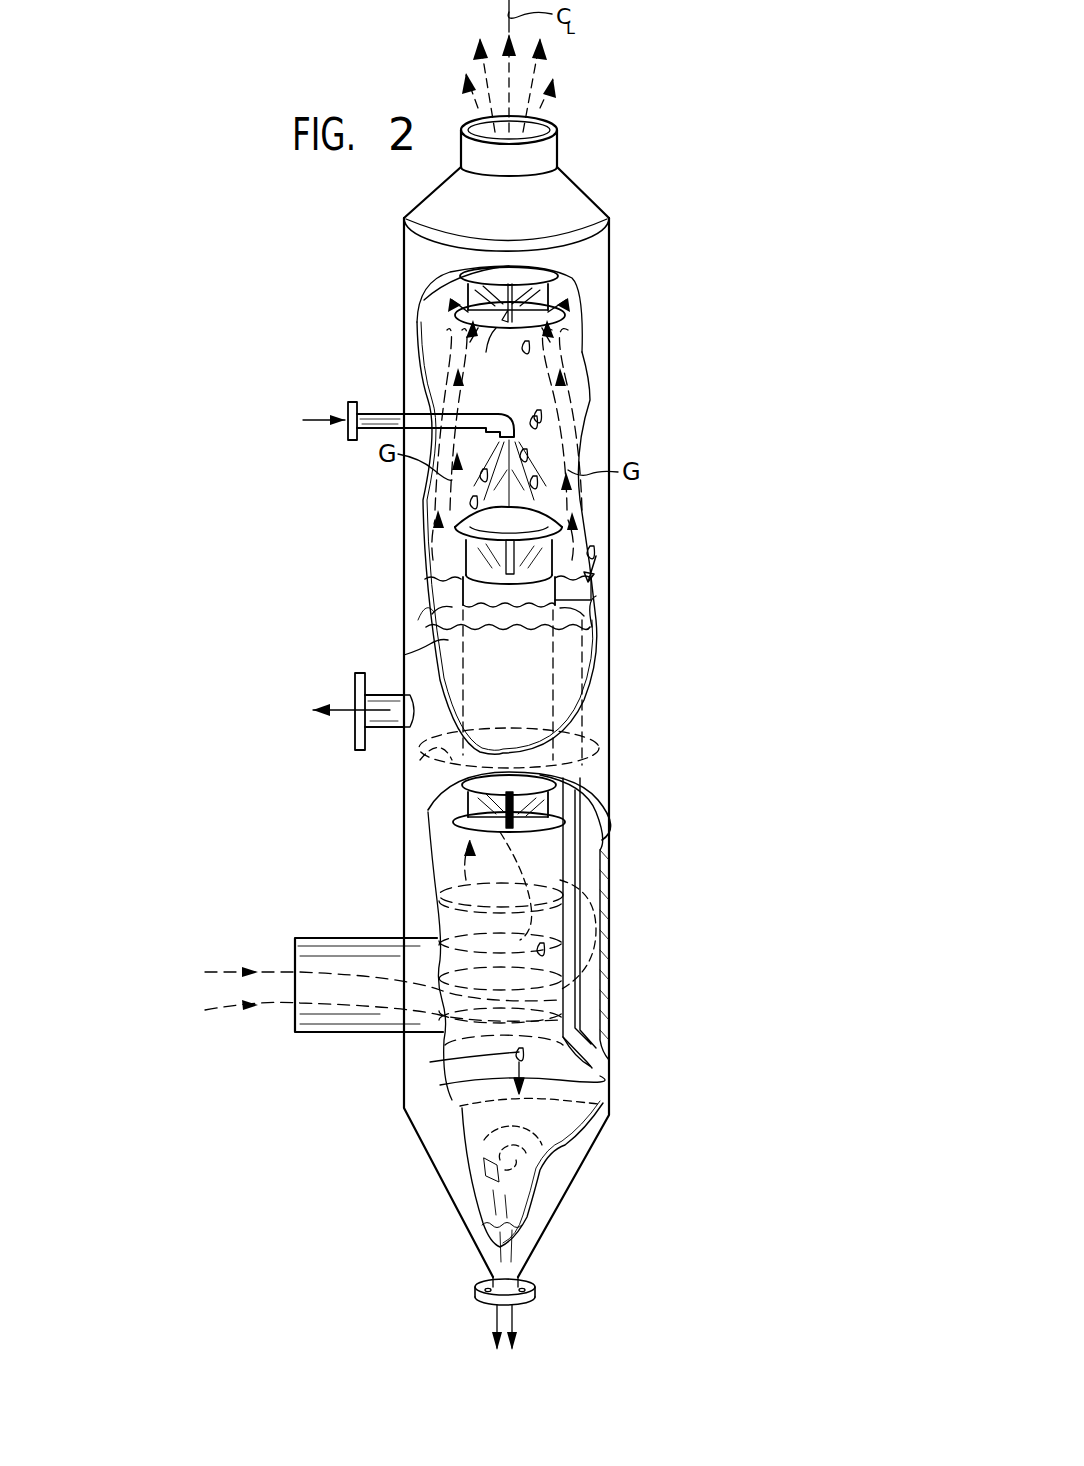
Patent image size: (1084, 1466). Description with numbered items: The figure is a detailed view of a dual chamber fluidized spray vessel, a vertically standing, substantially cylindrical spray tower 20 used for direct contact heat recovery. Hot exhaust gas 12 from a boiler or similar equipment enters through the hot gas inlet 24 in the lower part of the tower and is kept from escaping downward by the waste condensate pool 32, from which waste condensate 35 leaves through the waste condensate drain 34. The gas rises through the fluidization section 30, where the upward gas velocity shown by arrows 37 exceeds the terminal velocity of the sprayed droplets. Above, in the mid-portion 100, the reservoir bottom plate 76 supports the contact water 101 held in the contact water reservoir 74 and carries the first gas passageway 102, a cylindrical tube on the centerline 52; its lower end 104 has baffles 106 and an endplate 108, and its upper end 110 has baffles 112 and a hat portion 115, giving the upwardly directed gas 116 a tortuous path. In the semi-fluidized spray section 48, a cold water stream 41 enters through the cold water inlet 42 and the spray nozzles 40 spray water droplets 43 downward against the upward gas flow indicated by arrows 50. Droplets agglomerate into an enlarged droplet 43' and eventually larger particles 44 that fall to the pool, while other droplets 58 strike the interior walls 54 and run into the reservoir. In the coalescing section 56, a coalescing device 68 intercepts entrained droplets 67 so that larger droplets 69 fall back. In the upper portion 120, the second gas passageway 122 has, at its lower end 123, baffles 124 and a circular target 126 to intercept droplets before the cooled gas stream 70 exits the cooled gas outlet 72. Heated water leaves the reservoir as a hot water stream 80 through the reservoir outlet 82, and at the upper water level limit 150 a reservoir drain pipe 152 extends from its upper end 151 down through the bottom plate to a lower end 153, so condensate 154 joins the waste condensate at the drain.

The hot exhaust gas 12 is at (222, 972).
The spray tower 20 is at (612, 160).
The hot gas inlet 24 is at (352, 938).
The fluidization section 30 is at (687, 812).
The waste condensate pool 32 is at (484, 1222).
The waste condensate drain 34 is at (524, 1290).
The waste condensate 35 is at (512, 1322).
The upward gas velocity arrows 37 is at (466, 886).
The spray nozzles 40 is at (509, 438).
The cold water stream 41 is at (316, 420).
The cold water inlet 42 is at (386, 408).
The water droplets 43 is at (504, 460).
The enlarged droplet 43' is at (600, 934).
The larger particles 44 is at (452, 1060).
The semi-fluidized spray section 48 is at (687, 396).
The upward gas flow arrows 50 is at (560, 398).
The centerline 52 is at (509, 12).
The containment vessel interior walls 54 is at (418, 340).
The coalescing section 56 is at (687, 255).
The impinging droplets 58 is at (594, 548).
The entrained droplets 67 is at (462, 280).
The coalescing device 68 is at (452, 303).
The larger droplets 69 is at (530, 348).
The cooled gas stream 70 is at (552, 104).
The cooled gas outlet 72 is at (556, 128).
The contact water reservoir 74 is at (440, 648).
The reservoir bottom plate 76 is at (440, 760).
The hot water stream 80 is at (360, 706).
The contact water reservoir outlet 82 is at (380, 730).
The mid-portion of tower 100 is at (687, 587).
The contact water 101 is at (432, 620).
The first gas passageway 102 is at (560, 592).
The lower end of first gas passageway 104 is at (602, 798).
The baffles 106 is at (476, 800).
The endplate 108 is at (540, 830).
The upper end of first gas passageway 110 is at (470, 610).
The baffles 112 is at (463, 590).
The hat portion 115 is at (455, 524).
The upwardly directed gas 116 is at (500, 558).
The upper portion of spray tower 120 is at (603, 205).
The second gas passageway 122 is at (530, 274).
The lower end of second gas passageway 123 is at (560, 270).
The baffles 124 is at (500, 286).
The end plate or target 126 is at (492, 332).
The upper water level limit 150 is at (562, 616).
The upper end of drain pipe 151 is at (522, 687).
The reservoir drain pipe 152 is at (572, 696).
The lower end of drain pipe 153 is at (590, 1066).
The condensate 154 is at (570, 1150).